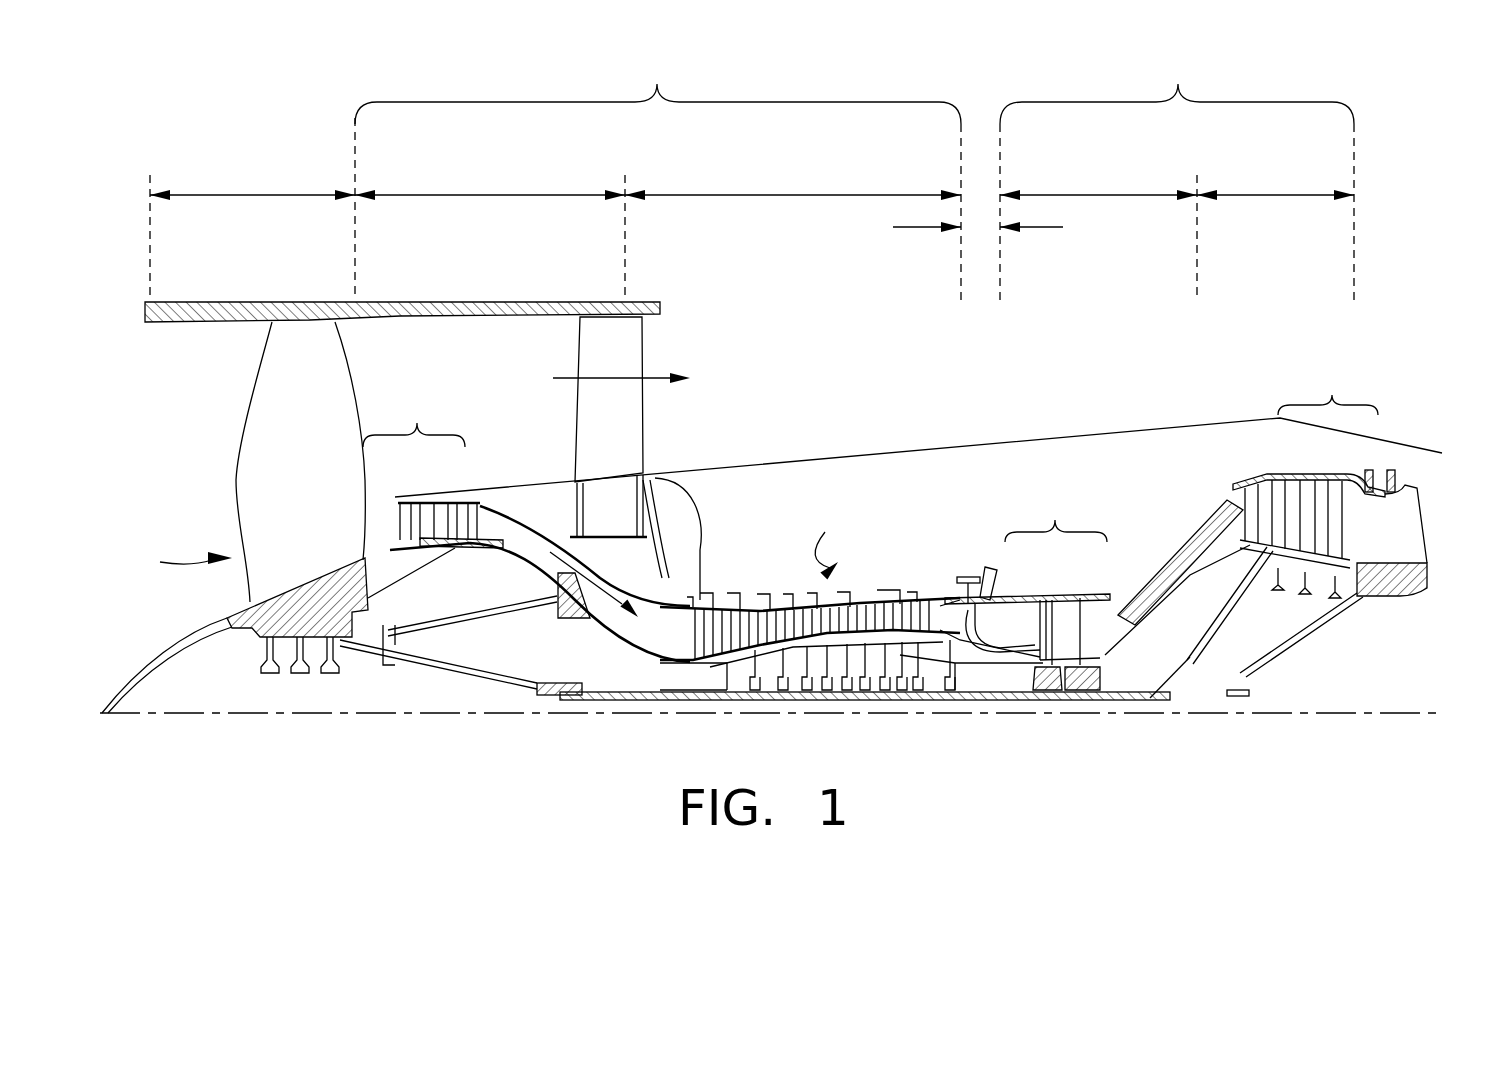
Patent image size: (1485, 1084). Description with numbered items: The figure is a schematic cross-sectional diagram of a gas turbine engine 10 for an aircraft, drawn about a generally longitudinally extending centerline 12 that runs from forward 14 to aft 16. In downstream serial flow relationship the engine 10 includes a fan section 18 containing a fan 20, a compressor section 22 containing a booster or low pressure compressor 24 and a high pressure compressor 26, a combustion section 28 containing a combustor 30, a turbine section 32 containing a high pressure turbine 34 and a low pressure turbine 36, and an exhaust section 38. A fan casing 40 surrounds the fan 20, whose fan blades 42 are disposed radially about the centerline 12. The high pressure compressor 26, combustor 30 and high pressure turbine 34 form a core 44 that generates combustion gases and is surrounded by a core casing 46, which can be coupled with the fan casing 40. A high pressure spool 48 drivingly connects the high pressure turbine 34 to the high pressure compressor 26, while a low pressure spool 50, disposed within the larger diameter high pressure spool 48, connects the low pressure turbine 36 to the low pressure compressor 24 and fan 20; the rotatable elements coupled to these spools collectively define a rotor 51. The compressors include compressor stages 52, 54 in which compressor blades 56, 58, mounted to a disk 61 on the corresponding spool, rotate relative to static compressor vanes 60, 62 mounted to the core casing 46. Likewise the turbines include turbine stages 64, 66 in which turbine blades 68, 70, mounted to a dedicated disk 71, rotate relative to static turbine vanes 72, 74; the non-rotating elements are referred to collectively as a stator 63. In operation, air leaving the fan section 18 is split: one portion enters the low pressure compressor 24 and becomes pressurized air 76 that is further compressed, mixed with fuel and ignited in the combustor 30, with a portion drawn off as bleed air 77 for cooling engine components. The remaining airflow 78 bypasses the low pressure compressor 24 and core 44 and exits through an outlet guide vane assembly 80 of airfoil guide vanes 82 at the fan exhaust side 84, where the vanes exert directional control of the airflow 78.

The gas turbine engine 10 is at (1380, 214).
The centerline 12 is at (232, 714).
The forward 14 is at (180, 439).
The aft 16 is at (1455, 534).
The fan section 18 is at (257, 195).
The fan 20 is at (178, 562).
The compressor section 22 is at (657, 84).
The low pressure compressor 24 is at (500, 195).
The high pressure compressor 26 is at (800, 195).
The combustion section 28 is at (905, 228).
The combustor 30 is at (992, 572).
The turbine section 32 is at (1178, 84).
The high pressure turbine 34 is at (1100, 195).
The low pressure turbine 36 is at (1273, 195).
The exhaust section 38 is at (1423, 503).
The fan casing 40 is at (390, 303).
The fan blades 42 is at (328, 365).
The core 44 is at (925, 477).
The core casing 46 is at (1180, 520).
The high pressure spool 48 is at (960, 665).
The low pressure spool 50 is at (556, 695).
The rotor 51 is at (832, 714).
The compressor stages 52 is at (417, 424).
The compressor stages 54 is at (790, 560).
The compressor blades 56 is at (425, 507).
The compressor blades 58 is at (720, 604).
The static compressor vanes 60 is at (400, 510).
The disk 61 is at (448, 547).
The static compressor vanes 62 is at (698, 625).
The stator 63 is at (691, 680).
The turbine stages 64 is at (1055, 530).
The turbine stages 66 is at (1332, 402).
The turbine blades 68 is at (1055, 592).
The turbine blades 70 is at (1342, 492).
The disk 71 is at (1065, 665).
The static turbine vanes 72 is at (1043, 592).
The static turbine vanes 74 is at (1323, 490).
The pressurized air 76 is at (590, 620).
The bleed air 77 is at (840, 546).
The airflow 78 is at (568, 378).
The outlet guide vane assembly 80 is at (658, 432).
The airfoil guide vanes 82 is at (587, 415).
The fan exhaust side 84 is at (665, 346).